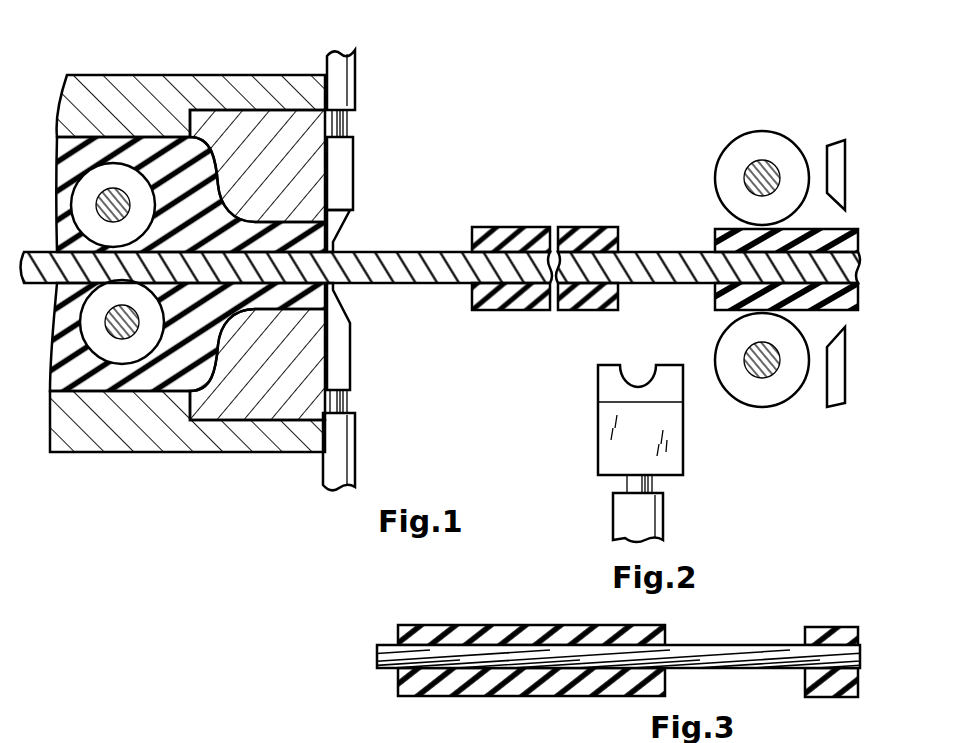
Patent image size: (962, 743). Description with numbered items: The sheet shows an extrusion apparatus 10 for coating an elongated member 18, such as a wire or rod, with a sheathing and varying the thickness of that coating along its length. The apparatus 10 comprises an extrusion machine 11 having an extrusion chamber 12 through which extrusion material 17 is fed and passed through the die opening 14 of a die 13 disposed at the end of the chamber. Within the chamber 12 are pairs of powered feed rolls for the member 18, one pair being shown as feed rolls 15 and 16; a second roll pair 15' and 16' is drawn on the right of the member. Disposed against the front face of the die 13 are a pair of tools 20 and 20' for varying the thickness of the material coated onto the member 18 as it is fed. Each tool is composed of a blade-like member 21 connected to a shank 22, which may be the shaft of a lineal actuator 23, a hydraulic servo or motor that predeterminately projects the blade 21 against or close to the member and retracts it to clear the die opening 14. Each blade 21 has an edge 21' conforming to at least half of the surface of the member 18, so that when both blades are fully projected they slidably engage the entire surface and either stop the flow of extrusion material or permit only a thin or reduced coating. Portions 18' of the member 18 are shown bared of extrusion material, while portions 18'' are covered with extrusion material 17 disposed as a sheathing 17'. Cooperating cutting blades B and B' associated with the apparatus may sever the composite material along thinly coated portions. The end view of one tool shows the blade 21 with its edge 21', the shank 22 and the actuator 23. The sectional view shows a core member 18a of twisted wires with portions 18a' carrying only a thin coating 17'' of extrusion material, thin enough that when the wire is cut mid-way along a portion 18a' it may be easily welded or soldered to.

In FIG. 1, the apparatus 10 is at (391, 106).
In FIG. 1, the extrusion machine 11 is at (150, 76).
In FIG. 1, the extrusion chamber 12 is at (68, 77).
In FIG. 1, the die 13 is at (255, 122).
In FIG. 1, the die opening 14 is at (308, 218).
In FIG. 1, the feed roll 15 is at (169, 335).
In FIG. 1, the feed roll 16 is at (170, 194).
In FIG. 1, the extrusion material 17 is at (588, 249).
In FIG. 1, the elongated member 18 is at (287, 249).
In FIG. 1, the bared portions of the member 18' is at (633, 268).
In FIG. 1, the coated portions of the member 18'' is at (595, 225).
In FIG. 1, the tool 20 is at (367, 170).
In FIG. 1, the tool 20' is at (366, 451).
In FIG. 1, the blade-like member 21 is at (360, 300).
In FIG. 2, the blade-like member 21 is at (611, 420).
In FIG. 2, the blade edge 21' is at (620, 361).
In FIG. 1, the shank 22 is at (349, 108).
In FIG. 2, the shank 22 is at (627, 483).
In FIG. 1, the lineal actuator 23 is at (349, 67).
In FIG. 2, the lineal actuator 23 is at (657, 518).
In FIG. 1, the roller 15' is at (760, 371).
In FIG. 1, the roller 16' is at (756, 162).
In FIG. 1, the cutting blade B is at (845, 155).
In FIG. 1, the cutting blade B' is at (840, 385).
In FIG. 3, the sheathing 17' is at (531, 641).
In FIG. 3, the thin coating 17'' is at (820, 643).
In FIG. 3, the core member 18a is at (589, 657).
In FIG. 3, the thinly coated portions of the core 18a' is at (481, 648).